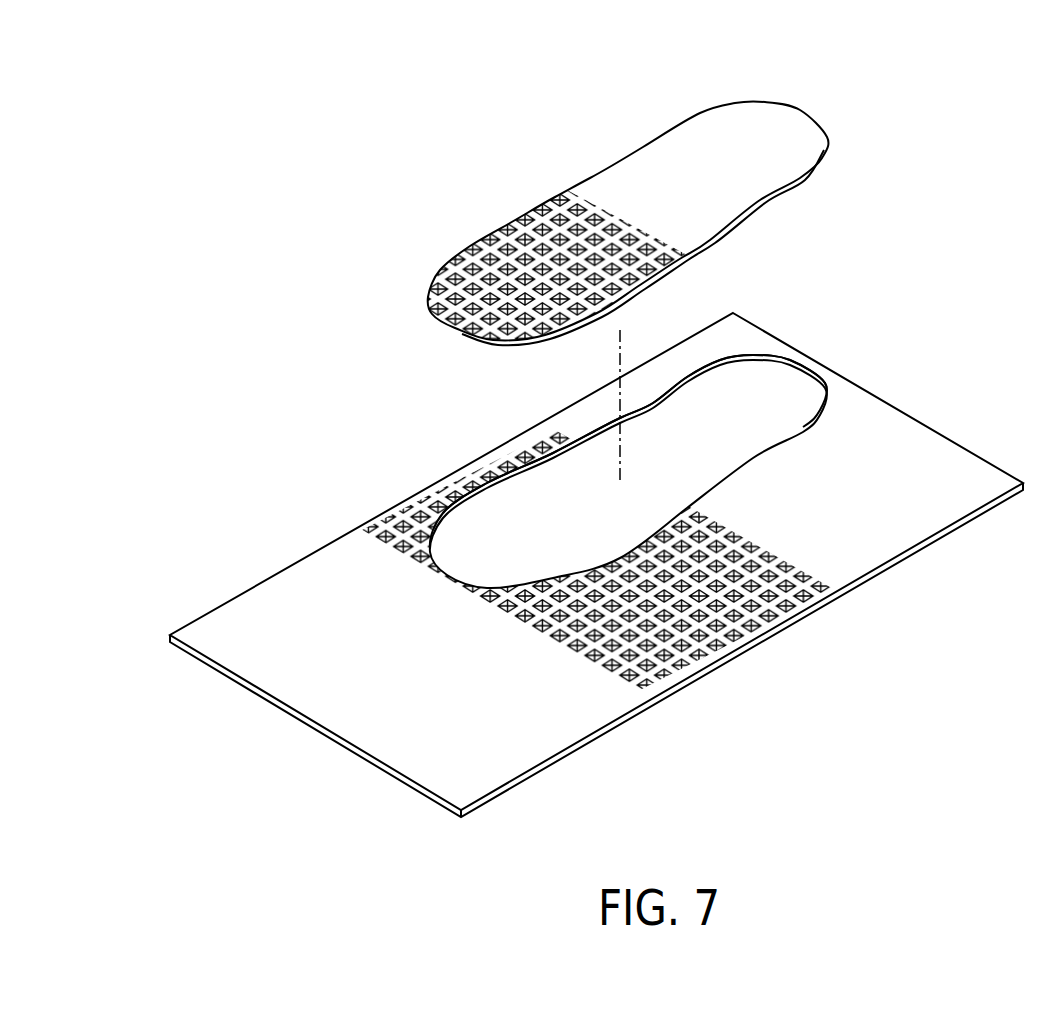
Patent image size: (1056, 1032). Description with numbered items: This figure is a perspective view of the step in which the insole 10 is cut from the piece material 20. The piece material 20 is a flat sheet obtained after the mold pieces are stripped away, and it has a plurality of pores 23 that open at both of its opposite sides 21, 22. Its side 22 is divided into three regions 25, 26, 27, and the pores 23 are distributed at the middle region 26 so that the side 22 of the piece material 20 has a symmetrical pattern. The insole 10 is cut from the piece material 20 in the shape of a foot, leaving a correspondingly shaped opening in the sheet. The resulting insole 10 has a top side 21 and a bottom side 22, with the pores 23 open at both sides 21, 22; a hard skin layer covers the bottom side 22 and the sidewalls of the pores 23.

The insole 10 is at (713, 390).
The piece material 20 is at (596, 558).
The top side 21 is at (703, 243).
The bottom side 22 is at (740, 128).
The pores 23 is at (507, 224).
The region 25 is at (565, 720).
The region 26 is at (743, 648).
The region 27 is at (860, 535).